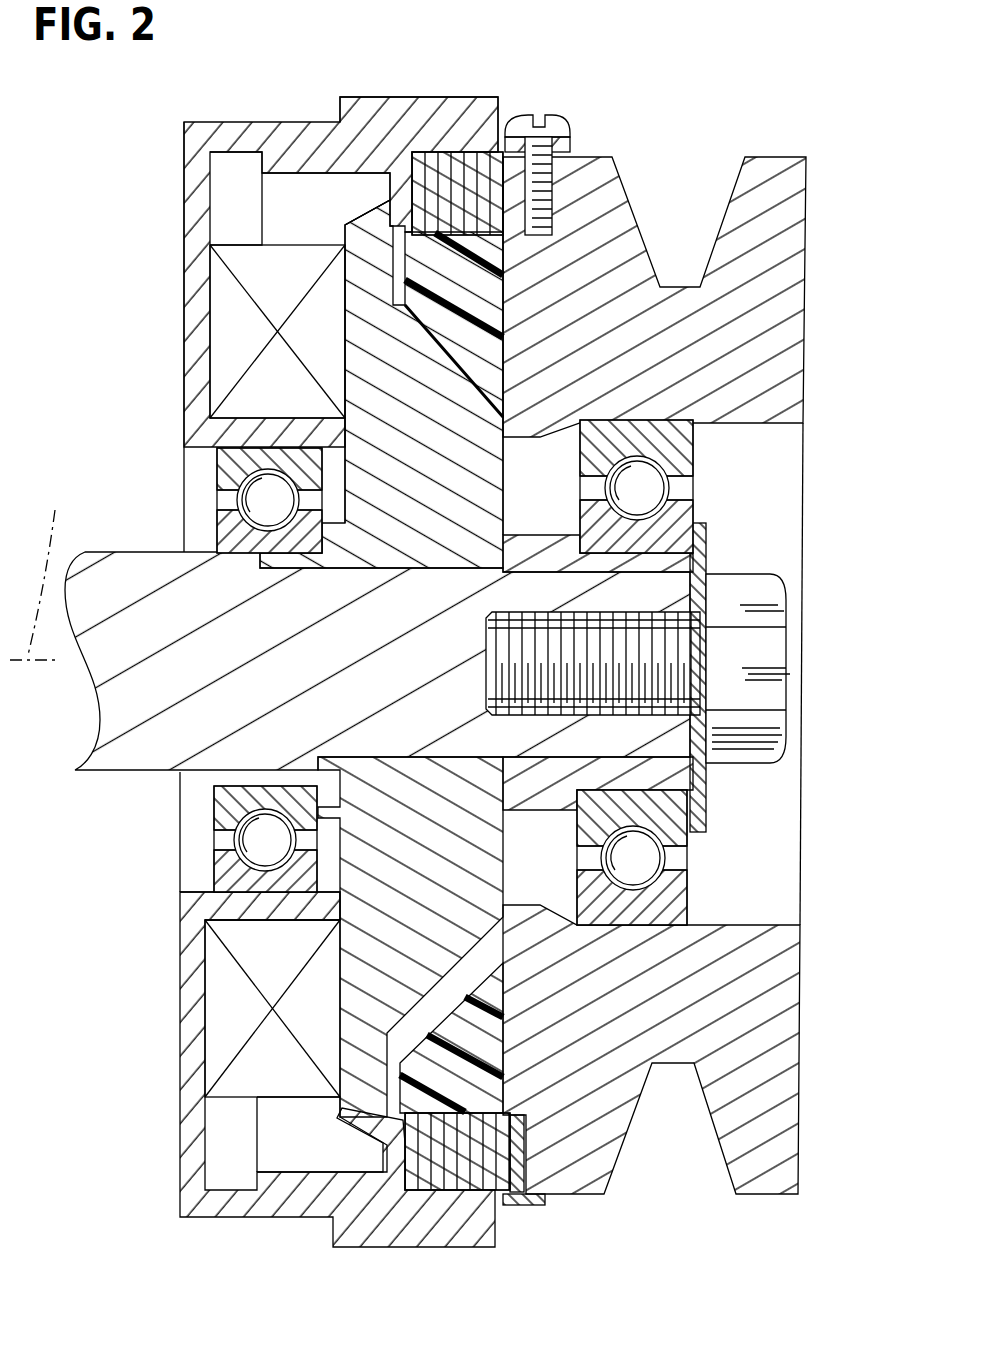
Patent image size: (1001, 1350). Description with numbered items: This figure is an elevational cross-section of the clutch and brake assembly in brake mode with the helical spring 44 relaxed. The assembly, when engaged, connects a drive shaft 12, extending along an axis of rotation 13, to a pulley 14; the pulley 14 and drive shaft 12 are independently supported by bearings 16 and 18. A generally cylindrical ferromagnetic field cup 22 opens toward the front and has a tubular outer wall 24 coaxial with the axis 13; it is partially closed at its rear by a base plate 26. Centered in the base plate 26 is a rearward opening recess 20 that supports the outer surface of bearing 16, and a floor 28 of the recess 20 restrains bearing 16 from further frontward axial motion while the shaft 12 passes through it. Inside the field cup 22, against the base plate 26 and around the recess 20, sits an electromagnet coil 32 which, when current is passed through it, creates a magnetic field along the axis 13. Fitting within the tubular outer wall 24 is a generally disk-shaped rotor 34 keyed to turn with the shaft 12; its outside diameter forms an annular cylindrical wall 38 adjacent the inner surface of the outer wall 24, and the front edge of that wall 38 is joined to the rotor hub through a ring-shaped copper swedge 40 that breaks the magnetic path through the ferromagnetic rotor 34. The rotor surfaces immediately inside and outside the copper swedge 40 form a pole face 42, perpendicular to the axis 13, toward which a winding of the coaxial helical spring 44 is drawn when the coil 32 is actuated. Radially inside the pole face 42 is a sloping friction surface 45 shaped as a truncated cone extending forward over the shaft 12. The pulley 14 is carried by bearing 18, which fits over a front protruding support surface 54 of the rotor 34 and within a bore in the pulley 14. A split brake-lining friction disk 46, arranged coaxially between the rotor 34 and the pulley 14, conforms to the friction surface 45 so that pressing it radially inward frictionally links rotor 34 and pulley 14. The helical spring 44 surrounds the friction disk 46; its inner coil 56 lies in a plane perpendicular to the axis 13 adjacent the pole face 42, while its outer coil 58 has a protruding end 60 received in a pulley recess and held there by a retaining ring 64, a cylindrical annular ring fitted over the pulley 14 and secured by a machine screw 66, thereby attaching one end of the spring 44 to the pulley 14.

The drive shaft 12 is at (100, 773).
The axis of rotation 13 is at (40, 568).
The pulley 14 is at (808, 283).
The bearing 16 is at (208, 802).
The bearing 18 is at (693, 452).
The rearward opening recess 20 is at (192, 882).
The field cup 22 is at (184, 122).
The tubular outer wall 24 is at (377, 97).
The base plate 26 is at (183, 188).
The floor 28 is at (207, 902).
The electromagnet coil 32 is at (233, 337).
The rotor 34 is at (353, 238).
The annular cylindrical wall 38 is at (307, 162).
The copper swedge 40 is at (393, 187).
The pole face 42 is at (362, 1123).
The helical spring 44 is at (445, 172).
The friction surface 45 is at (442, 345).
The friction disk 46 is at (445, 285).
The support surface 54 is at (498, 317).
The inner coil 56 is at (412, 1182).
The outer coil 58 is at (638, 880).
The protruding end 60 is at (520, 1160).
The retaining ring 64 is at (572, 150).
The machine screw 66 is at (555, 123).